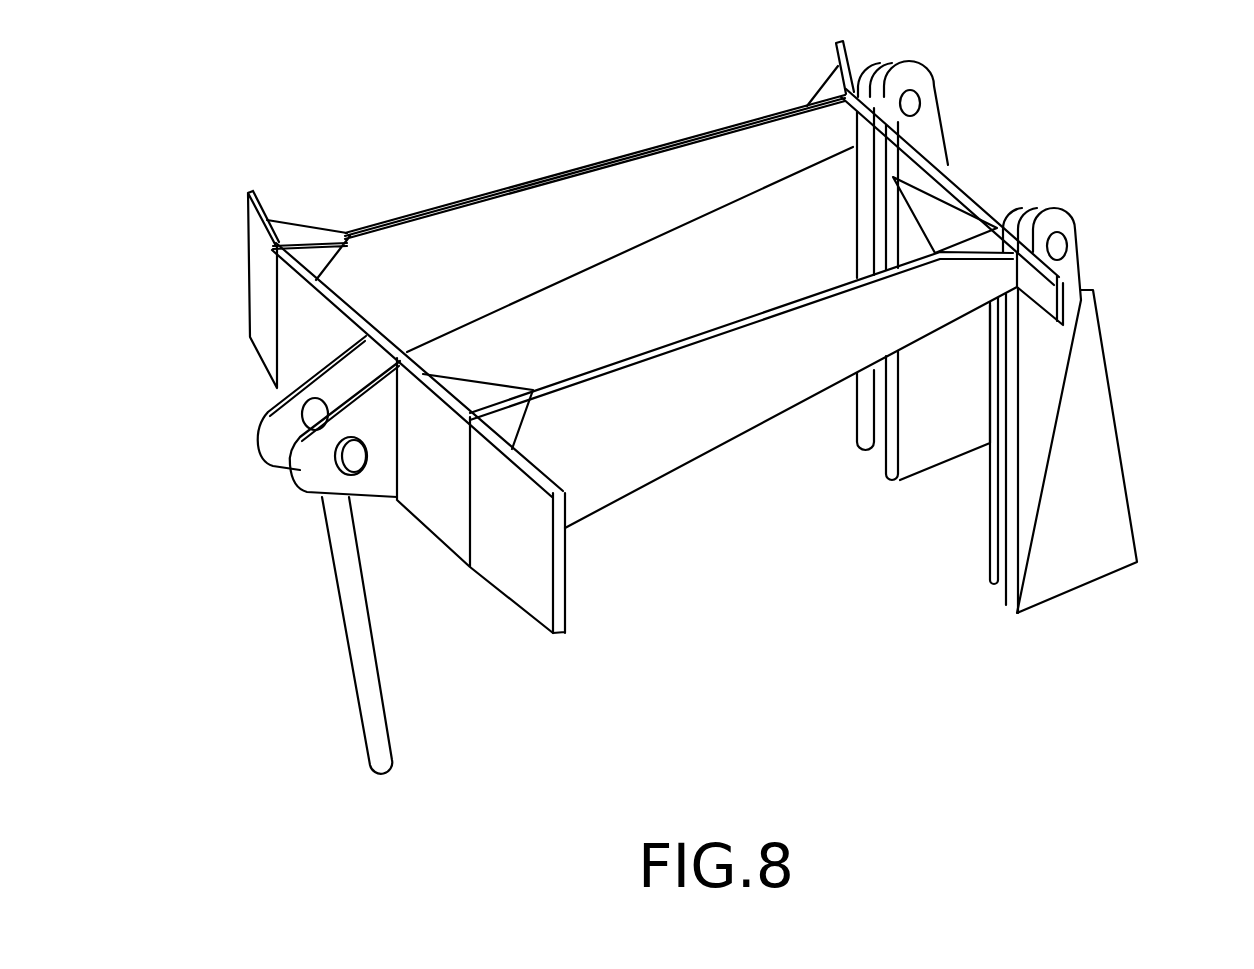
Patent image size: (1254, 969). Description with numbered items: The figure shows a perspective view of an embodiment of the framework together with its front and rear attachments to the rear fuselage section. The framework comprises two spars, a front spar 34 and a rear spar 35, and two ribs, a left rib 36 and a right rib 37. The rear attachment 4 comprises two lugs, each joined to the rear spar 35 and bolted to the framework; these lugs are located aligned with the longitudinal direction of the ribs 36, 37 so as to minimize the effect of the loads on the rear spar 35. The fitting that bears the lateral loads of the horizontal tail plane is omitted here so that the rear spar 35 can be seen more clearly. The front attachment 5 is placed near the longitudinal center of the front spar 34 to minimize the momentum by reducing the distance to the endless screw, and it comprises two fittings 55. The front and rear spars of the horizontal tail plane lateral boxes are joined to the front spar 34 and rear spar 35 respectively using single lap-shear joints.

The right rib 37 is at (607, 156).
The left rib 36 is at (683, 334).
The front spar 34 is at (301, 307).
The rear spar 35 is at (908, 173).
The fitting 55 is at (280, 427).
The rear attachment 4 is at (1080, 467).
The front attachment 5 is at (358, 648).